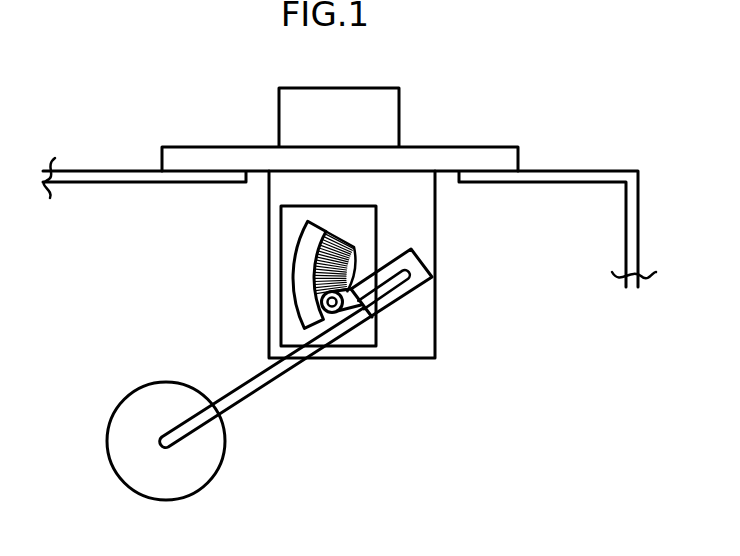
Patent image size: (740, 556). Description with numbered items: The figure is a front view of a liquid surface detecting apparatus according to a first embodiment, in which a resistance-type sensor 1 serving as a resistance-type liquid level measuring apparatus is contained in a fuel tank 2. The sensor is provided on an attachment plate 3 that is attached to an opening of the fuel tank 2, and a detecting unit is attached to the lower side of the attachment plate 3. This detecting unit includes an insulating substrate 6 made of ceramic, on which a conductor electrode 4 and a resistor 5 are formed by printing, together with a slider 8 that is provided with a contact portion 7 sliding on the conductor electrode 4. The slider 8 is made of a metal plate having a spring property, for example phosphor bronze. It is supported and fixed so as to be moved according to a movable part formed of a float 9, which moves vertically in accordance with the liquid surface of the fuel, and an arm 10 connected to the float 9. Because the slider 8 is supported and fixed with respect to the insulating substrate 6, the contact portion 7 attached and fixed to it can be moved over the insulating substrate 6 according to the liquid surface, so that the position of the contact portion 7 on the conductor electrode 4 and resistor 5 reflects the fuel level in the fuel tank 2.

The resistance-type sensor 1 is at (262, 261).
The fuel tank 2 is at (548, 175).
The attachment plate 3 is at (452, 157).
The conductor electrode 4 is at (349, 243).
The resistor 5 is at (303, 295).
The insulating substrate 6 is at (355, 340).
The contact portion 7 is at (322, 311).
The slider 8 is at (346, 305).
The float 9 is at (203, 467).
The arm 10 is at (240, 392).